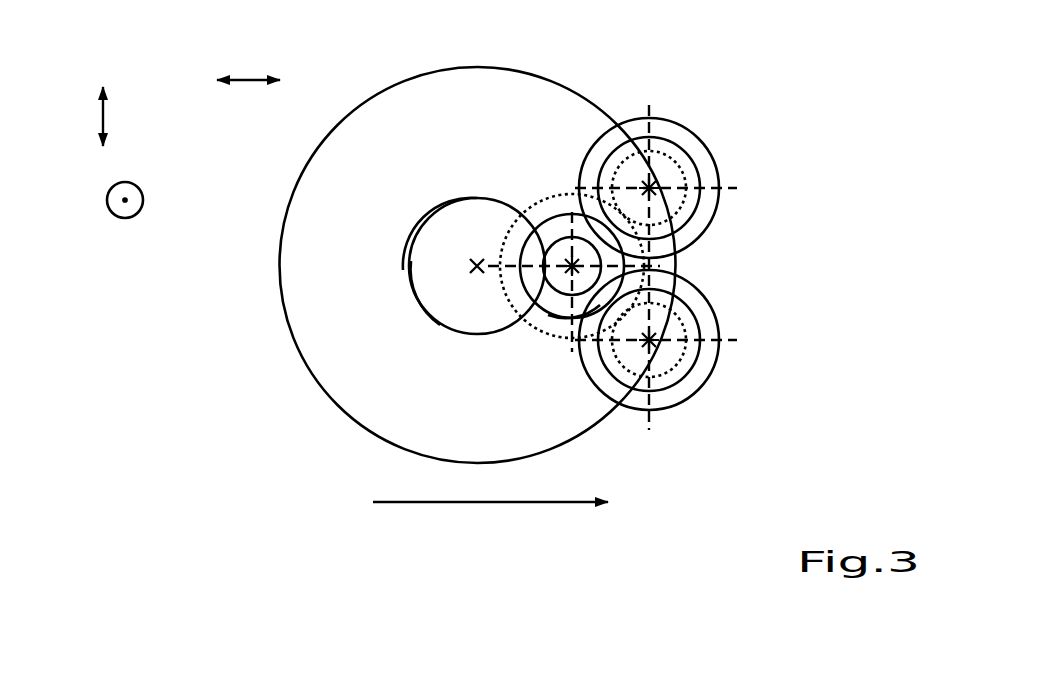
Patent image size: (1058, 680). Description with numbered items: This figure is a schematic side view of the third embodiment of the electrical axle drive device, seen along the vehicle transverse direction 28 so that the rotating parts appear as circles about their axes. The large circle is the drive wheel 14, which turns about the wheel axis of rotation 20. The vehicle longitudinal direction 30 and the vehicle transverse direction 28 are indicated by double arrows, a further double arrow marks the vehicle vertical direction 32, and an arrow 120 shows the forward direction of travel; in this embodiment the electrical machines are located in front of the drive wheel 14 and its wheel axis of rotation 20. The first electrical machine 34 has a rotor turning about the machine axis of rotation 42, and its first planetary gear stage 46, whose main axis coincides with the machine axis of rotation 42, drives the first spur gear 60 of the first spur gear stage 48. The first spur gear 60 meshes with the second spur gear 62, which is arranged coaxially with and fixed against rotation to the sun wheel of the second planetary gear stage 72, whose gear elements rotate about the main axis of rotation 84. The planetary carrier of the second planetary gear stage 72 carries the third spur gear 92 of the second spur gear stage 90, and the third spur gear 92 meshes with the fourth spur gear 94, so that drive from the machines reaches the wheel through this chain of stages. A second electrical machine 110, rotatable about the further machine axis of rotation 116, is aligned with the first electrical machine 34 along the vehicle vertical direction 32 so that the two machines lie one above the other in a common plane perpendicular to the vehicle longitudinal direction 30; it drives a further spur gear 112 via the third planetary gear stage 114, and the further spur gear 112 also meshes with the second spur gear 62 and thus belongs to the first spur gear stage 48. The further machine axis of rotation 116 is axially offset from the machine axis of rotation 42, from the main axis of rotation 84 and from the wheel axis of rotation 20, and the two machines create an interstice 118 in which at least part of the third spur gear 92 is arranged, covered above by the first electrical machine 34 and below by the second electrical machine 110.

The drive wheel 14 is at (391, 80).
The wheel axis of rotation 20 is at (470, 261).
The vehicle transverse direction 28 is at (144, 196).
The vehicle longitudinal direction 30 is at (243, 78).
The vertical direction 32 is at (105, 111).
The first electrical machine 34 is at (712, 152).
The machine axis of rotation 42 is at (655, 191).
The first planetary gear stage 46 is at (699, 172).
The first spur gear stage 48 is at (655, 118).
The first spur gear 60 is at (681, 140).
The second spur gear 62 is at (542, 205).
The second planetary gear stage 72 is at (548, 315).
The main axis of rotation 84 is at (543, 250).
The second spur gear stage 90 is at (400, 270).
The third spur gear 92 is at (562, 302).
The fourth spur gear 94 is at (440, 325).
The second electrical machine 110 is at (710, 377).
The further spur gear 112 is at (697, 309).
The third planetary gear stage 114 is at (702, 350).
The further machine axis of rotation 116 is at (651, 342).
The interstice 118 is at (577, 233).
The arrow 120 is at (495, 504).